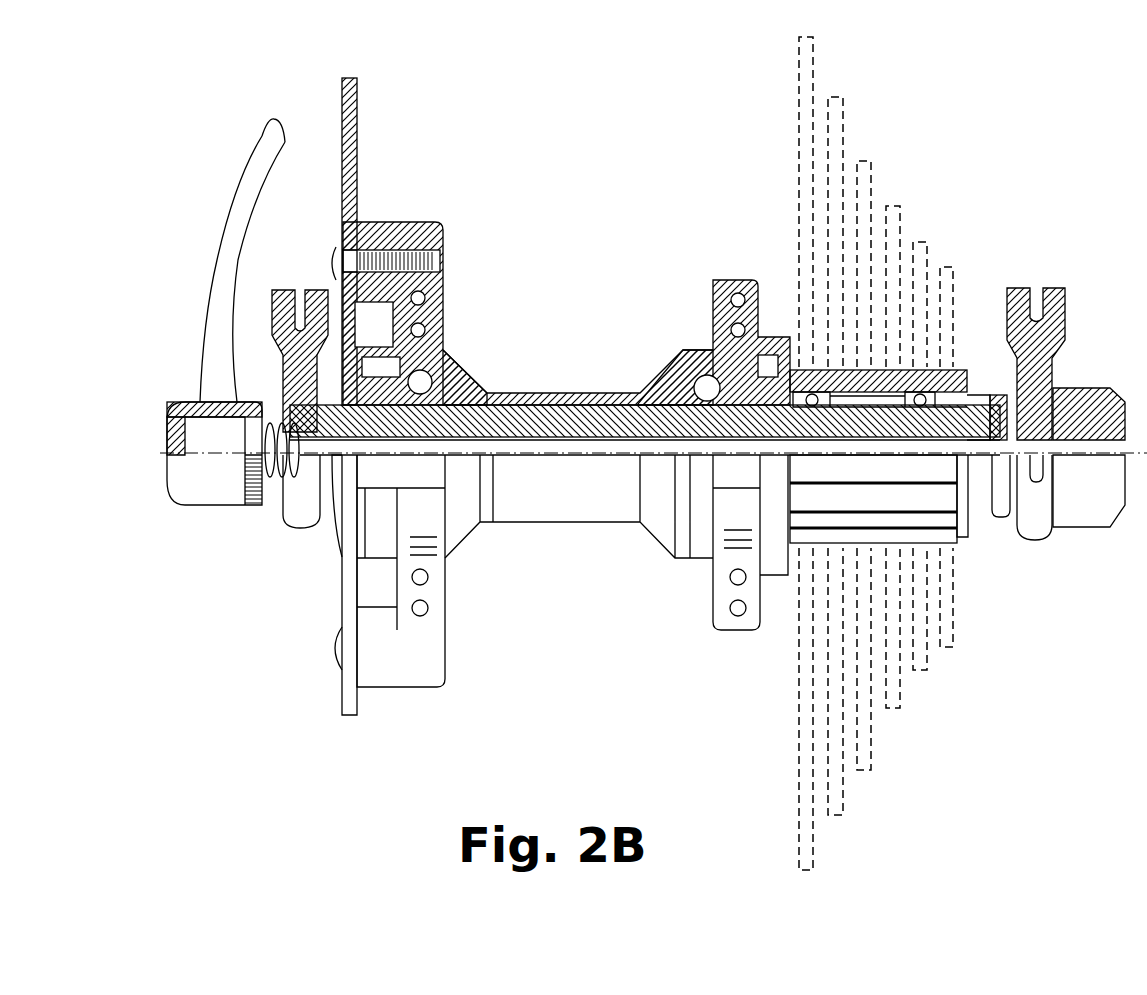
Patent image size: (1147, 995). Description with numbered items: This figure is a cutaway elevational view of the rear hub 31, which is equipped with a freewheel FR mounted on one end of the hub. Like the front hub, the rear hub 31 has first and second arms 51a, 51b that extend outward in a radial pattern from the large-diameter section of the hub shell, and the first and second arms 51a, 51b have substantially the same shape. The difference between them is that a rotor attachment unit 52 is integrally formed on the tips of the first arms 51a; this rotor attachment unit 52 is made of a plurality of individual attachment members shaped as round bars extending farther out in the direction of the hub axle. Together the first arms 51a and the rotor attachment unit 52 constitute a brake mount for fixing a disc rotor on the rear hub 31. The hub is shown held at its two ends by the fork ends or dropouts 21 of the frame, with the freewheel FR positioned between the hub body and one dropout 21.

The dropout (fork end) 21 is at (290, 289).
The rear hub 31 is at (568, 300).
The first arms 51a is at (440, 225).
The second arms 51b is at (723, 282).
The rotor attachment unit 52 is at (437, 671).
The freewheel FR is at (922, 552).